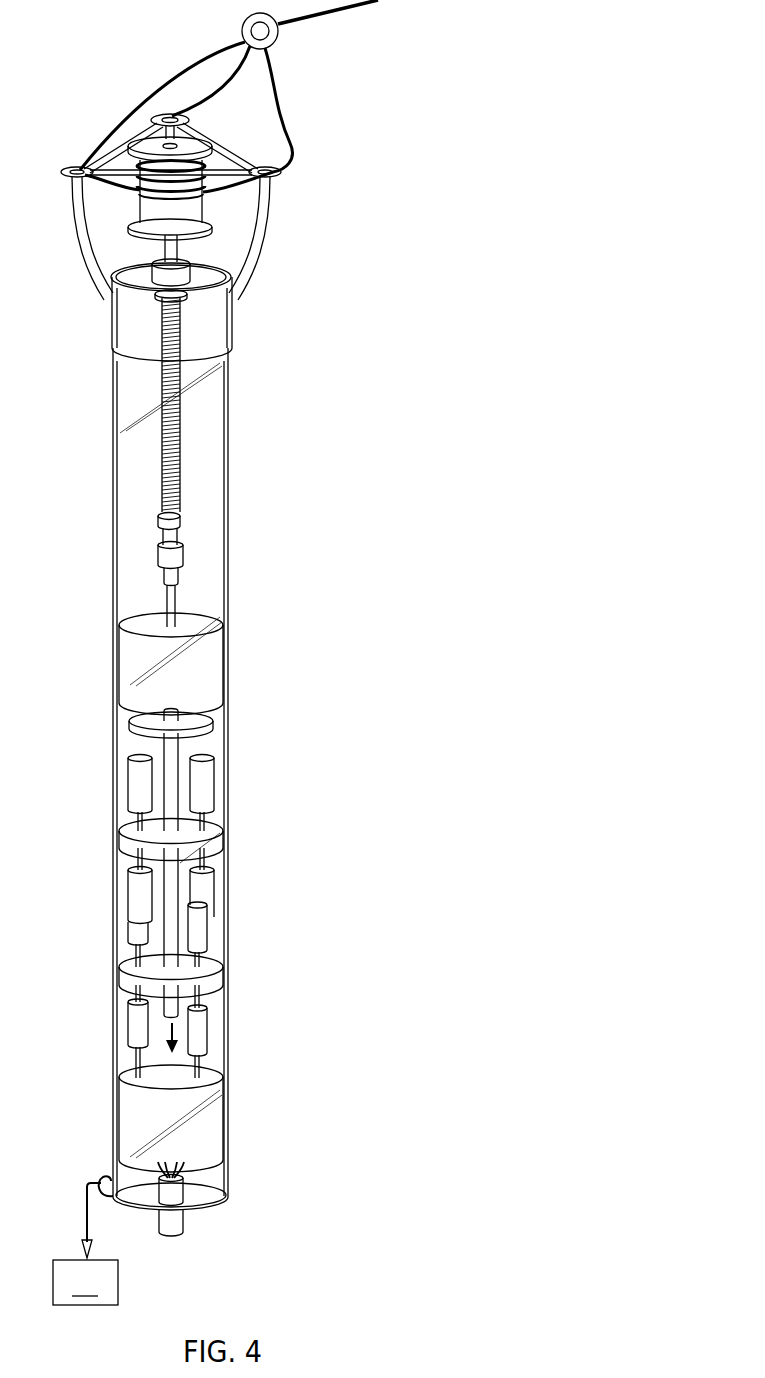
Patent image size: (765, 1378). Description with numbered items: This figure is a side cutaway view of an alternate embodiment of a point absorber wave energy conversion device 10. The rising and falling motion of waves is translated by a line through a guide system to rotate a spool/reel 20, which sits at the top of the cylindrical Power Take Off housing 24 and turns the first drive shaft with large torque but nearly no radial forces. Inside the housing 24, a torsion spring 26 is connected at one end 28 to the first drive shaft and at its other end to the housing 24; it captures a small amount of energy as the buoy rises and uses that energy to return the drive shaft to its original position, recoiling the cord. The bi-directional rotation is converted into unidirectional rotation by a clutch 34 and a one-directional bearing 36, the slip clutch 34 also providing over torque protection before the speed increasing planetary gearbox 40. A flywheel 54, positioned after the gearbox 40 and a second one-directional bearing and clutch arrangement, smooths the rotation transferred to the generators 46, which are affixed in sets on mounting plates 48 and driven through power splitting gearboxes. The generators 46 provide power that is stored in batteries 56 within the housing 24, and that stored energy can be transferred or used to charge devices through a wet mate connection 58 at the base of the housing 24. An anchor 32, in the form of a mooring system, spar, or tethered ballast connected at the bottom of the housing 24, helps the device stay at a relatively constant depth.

The point absorber wave energy conversion device 10 is at (298, 381).
The spool/reel 20 is at (138, 206).
The Power Take Off (PTO) housing 24 is at (112, 473).
The torsion spring 26 is at (168, 422).
The one end of torsion spring 28 is at (178, 522).
The clutch 34 is at (179, 555).
The one-directional bearing 36 is at (190, 580).
The planetary gearbox 40 is at (210, 658).
The flywheel 54 is at (130, 725).
The generators 46 is at (210, 783).
The mounting plate 48 is at (122, 843).
The batteries 56 is at (122, 1115).
The wet mate connection 58 is at (180, 1220).
The anchor 32 is at (85, 1240).